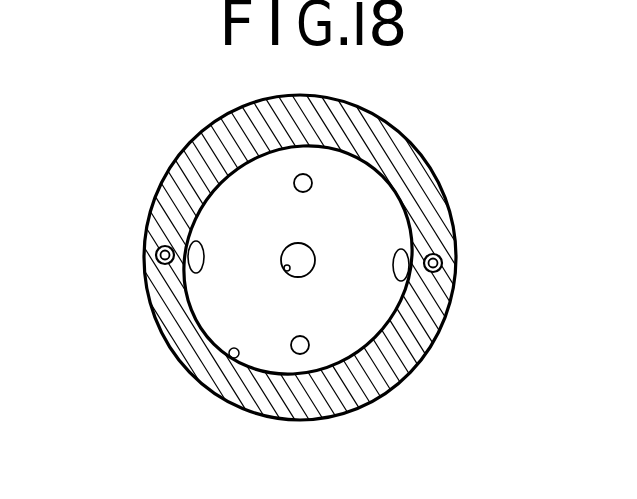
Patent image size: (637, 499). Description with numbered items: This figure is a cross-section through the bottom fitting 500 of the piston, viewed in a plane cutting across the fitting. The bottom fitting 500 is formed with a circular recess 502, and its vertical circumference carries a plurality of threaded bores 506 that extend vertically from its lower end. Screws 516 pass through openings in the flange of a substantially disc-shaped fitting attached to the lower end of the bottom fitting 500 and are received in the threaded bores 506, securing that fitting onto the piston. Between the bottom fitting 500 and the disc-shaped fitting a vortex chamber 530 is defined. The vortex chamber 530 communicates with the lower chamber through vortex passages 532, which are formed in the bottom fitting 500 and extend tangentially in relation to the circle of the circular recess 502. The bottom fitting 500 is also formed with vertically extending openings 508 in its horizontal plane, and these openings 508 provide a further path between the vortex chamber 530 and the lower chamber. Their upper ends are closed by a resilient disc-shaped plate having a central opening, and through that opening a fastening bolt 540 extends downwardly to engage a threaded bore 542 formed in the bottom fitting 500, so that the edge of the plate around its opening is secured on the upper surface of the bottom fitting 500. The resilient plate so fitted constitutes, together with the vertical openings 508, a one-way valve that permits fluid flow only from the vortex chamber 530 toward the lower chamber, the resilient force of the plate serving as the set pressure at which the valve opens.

The bottom fitting 500 is at (420, 165).
The circular recess 502 is at (237, 360).
The threaded bore 506 is at (163, 265).
The vertically extending opening 508 is at (308, 175).
The screw 516 is at (158, 253).
The vortex chamber 530 is at (237, 193).
The vortex passage 532 is at (408, 243).
The fastening bolt 540 is at (302, 258).
The threaded bore 542 is at (288, 271).